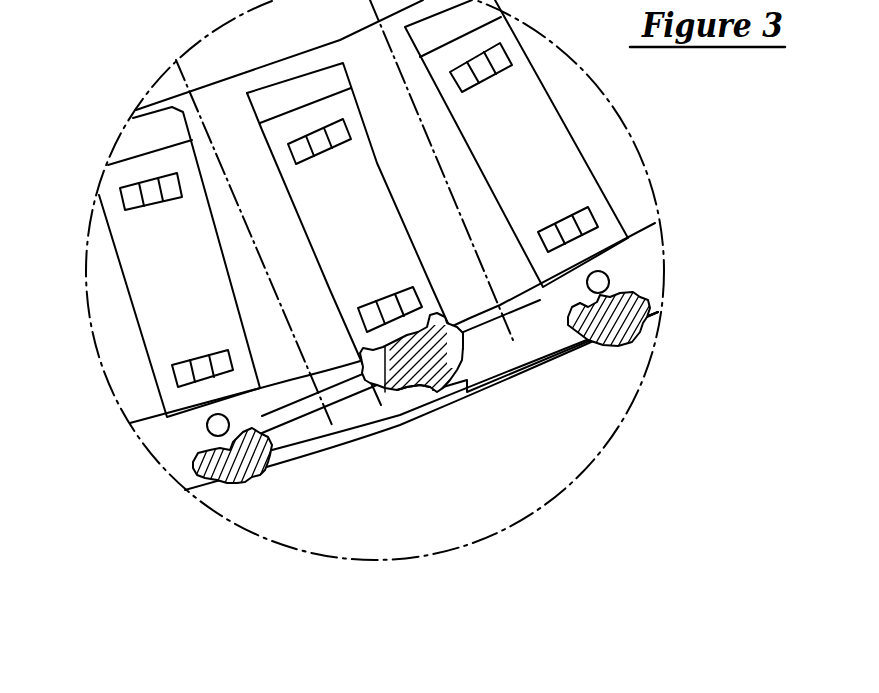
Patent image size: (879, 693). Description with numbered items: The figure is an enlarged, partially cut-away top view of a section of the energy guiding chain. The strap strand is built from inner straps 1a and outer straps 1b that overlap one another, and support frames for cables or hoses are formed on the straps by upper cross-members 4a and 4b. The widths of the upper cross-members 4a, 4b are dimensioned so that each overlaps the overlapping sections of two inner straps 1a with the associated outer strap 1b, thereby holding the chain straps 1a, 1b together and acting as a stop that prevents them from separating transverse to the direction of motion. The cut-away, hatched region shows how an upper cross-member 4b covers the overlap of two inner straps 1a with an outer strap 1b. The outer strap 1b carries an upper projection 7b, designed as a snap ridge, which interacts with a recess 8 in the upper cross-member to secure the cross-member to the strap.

The inner strap 1a is at (450, 342).
The outer strap 1b is at (465, 405).
The upper cross-member 4a is at (145, 283).
The upper cross-member 4b is at (368, 207).
The upper projection 7b is at (390, 307).
The marking plate 8 is at (367, 318).